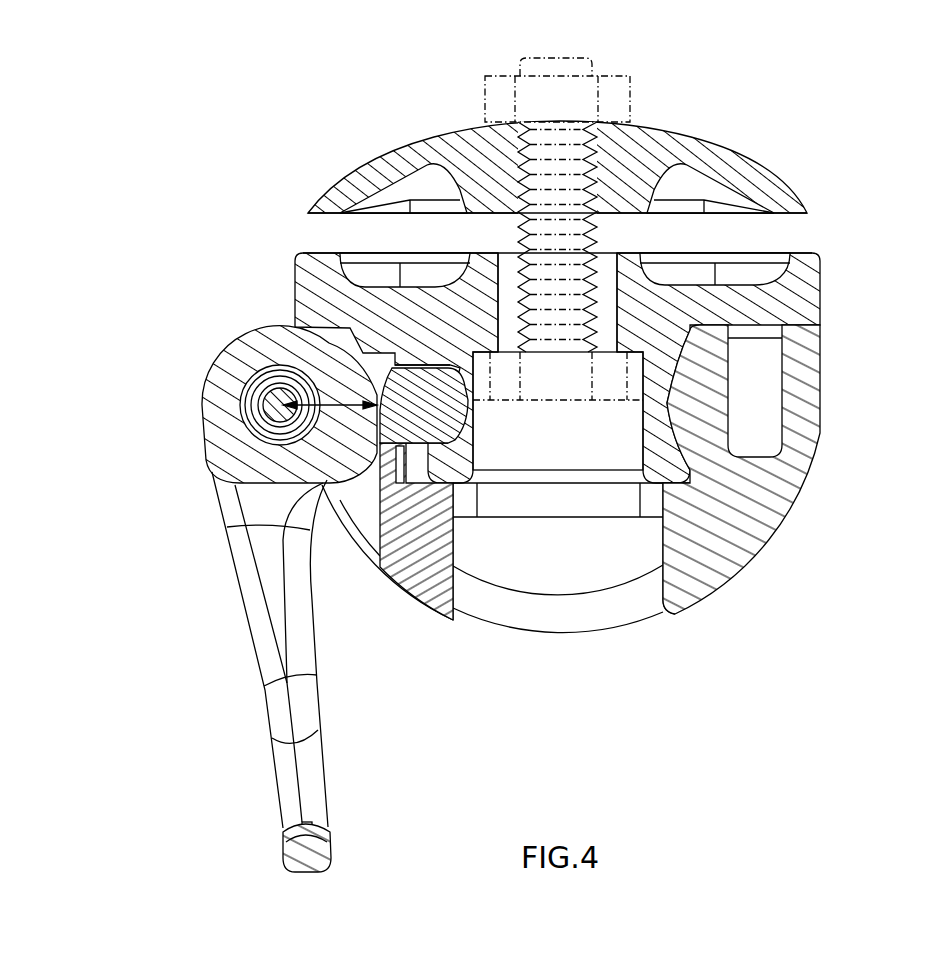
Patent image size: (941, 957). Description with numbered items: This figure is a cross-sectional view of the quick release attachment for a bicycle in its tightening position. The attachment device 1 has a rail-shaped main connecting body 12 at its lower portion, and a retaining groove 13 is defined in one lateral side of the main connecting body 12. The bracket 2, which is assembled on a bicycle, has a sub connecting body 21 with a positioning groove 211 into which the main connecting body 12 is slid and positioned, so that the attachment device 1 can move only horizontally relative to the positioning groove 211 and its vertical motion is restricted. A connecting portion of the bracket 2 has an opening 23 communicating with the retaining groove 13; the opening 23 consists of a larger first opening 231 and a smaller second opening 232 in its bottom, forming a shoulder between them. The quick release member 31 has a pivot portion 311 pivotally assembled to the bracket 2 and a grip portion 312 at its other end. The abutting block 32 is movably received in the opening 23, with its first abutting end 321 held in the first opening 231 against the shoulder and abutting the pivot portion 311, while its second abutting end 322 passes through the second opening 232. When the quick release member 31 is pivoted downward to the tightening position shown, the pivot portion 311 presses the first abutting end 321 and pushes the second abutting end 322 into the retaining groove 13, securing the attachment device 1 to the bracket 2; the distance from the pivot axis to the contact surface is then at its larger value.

The attachment device 1 is at (803, 157).
The main connecting body 12 is at (657, 377).
The retaining groove 13 is at (481, 490).
The bracket 2 is at (733, 620).
The sub connecting body 21 is at (737, 553).
The positioning groove 211 is at (620, 390).
The opening 23 is at (397, 578).
The first opening 231 is at (398, 482).
The second opening 232 is at (413, 450).
The quick release member 31 is at (272, 588).
The pivot portion 311 is at (220, 372).
The grip portion 312 is at (300, 843).
The abutting block 32 is at (300, 257).
The first abutting end 321 is at (405, 343).
The second abutting end 322 is at (501, 420).